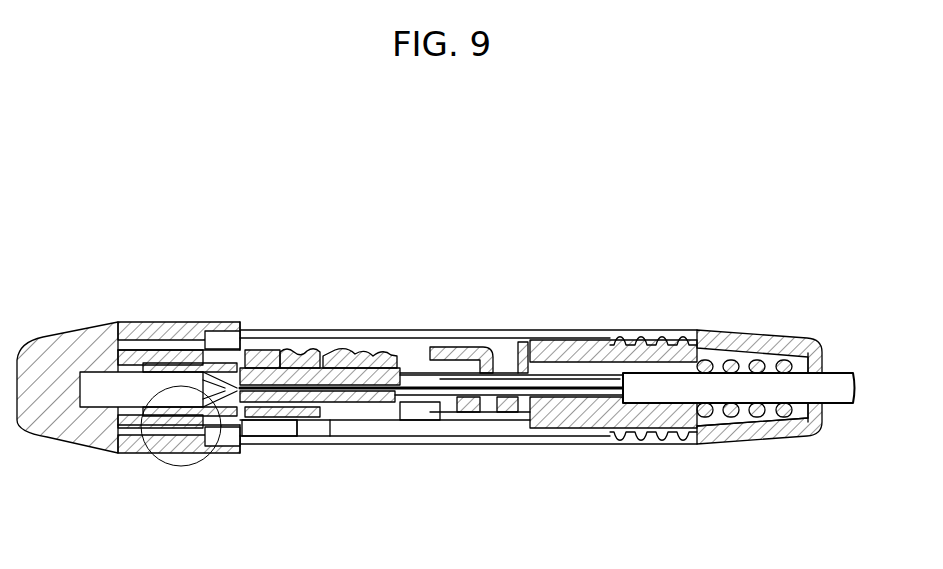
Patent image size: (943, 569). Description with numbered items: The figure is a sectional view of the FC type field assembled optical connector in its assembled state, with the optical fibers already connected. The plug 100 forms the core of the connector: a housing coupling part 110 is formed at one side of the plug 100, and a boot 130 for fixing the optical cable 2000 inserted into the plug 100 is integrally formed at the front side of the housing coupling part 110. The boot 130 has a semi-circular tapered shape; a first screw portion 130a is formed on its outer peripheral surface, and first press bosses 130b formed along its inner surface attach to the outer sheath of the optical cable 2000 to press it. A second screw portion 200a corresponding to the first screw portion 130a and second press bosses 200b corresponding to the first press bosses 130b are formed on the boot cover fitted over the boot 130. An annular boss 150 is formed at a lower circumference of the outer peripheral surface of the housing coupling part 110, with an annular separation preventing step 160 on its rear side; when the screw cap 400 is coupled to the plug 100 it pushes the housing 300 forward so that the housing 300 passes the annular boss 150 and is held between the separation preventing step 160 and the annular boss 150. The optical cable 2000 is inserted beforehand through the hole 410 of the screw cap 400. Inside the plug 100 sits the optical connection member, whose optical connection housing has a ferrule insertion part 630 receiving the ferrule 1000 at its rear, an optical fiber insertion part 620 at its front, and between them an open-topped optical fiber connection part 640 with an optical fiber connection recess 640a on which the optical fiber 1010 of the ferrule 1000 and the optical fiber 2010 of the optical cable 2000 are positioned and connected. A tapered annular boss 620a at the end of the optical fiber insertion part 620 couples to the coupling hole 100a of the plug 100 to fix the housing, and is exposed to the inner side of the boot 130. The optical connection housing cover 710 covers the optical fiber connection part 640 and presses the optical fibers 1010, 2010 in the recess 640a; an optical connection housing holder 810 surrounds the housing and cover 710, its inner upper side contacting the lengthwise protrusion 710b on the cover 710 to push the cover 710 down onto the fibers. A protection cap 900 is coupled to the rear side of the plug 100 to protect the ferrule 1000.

The plug 100 is at (88, 328).
The coupling hole 100a is at (475, 347).
The housing coupling part 110 is at (263, 438).
The boot 130 is at (555, 428).
The first screw portion 130a is at (657, 450).
The first press bosses 130b is at (708, 404).
The annular boss 150 is at (305, 446).
The separation preventing step 160 is at (148, 335).
The second screw portion 200a is at (640, 327).
The second press bosses 200b is at (708, 372).
The housing 300 is at (135, 455).
The screw cap 400 is at (778, 333).
The hole 410 is at (822, 367).
The optical fiber insertion part 620 is at (462, 412).
The annular boss 620a is at (505, 372).
The ferrule insertion part 630 is at (182, 363).
The optical fiber connection part 640 is at (340, 405).
The optical fiber connection recess 640a is at (357, 368).
The optical connection housing cover 710 is at (259, 350).
The protrusion 710b is at (288, 350).
The optical connection housing holder 810 is at (300, 349).
The protection cap 900 is at (32, 440).
The ferrule 1000 is at (97, 388).
The optical fiber 1010 is at (228, 437).
The optical cable 2000 is at (804, 400).
The optical fiber 2010 is at (395, 422).